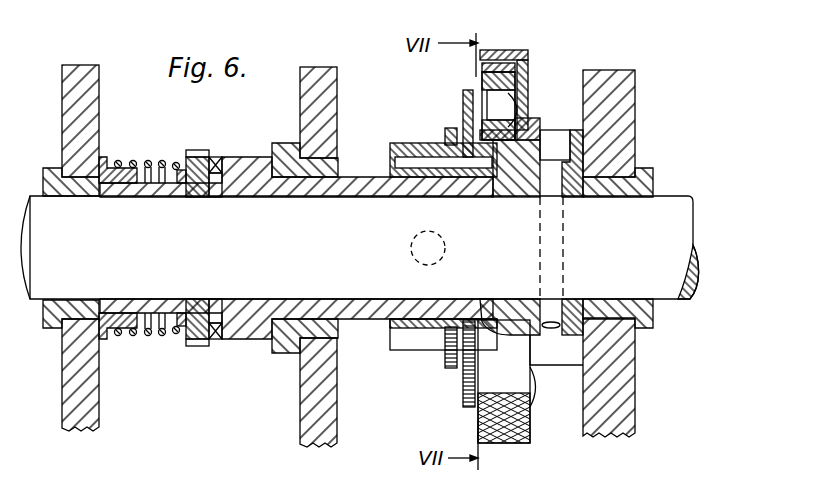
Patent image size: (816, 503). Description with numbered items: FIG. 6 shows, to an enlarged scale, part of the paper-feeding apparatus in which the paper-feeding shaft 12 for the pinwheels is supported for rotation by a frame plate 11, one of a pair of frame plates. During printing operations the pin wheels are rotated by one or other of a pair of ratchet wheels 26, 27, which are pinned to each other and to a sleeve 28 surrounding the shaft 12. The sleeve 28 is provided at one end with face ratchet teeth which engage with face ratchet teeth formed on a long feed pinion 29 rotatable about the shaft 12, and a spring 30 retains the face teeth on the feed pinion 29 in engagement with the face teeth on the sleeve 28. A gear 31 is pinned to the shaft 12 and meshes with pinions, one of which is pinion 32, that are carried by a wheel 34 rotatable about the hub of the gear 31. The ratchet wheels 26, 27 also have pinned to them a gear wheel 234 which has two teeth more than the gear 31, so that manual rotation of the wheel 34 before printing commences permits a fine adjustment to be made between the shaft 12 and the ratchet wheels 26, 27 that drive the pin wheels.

The frame plate 11 is at (628, 113).
The paper-feeding shaft 12 is at (667, 210).
The ratchet wheel 26 is at (466, 104).
The ratchet wheel 27 is at (448, 134).
The sleeve 28 is at (363, 190).
The long feed pinion 29 is at (203, 150).
The spring 30 is at (149, 162).
The gear 31 is at (513, 152).
The pinion 32 is at (510, 65).
The wheel 34 is at (500, 54).
The gear wheel 234 is at (500, 124).